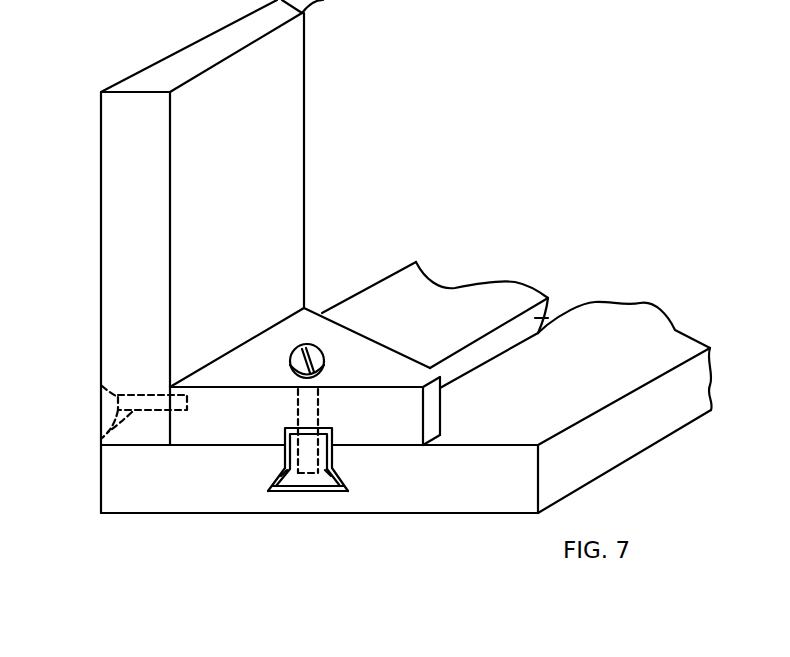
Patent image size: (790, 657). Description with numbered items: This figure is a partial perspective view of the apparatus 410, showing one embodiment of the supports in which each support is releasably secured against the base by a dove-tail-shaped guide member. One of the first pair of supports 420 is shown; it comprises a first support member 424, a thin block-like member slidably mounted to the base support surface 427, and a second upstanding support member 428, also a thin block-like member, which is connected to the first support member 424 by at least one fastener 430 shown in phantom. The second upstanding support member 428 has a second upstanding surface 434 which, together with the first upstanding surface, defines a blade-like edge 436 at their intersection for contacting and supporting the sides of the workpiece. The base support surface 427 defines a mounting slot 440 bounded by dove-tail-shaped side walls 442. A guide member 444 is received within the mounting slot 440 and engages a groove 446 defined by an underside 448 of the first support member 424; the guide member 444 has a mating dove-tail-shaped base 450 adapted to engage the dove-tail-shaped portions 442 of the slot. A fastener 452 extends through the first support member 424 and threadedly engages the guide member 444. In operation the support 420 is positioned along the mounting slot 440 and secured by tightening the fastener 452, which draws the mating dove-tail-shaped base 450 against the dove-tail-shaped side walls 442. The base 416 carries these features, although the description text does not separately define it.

The apparatus 410 is at (436, 241).
The base 416 is at (618, 438).
The first pair of supports 420 is at (96, 91).
The first support member 424 is at (271, 380).
The base support surface 427 is at (566, 396).
The second upstanding support member 428 is at (250, 219).
The fastener 430 is at (103, 436).
The second upstanding surface 434 is at (202, 33).
The blade-like edge 436 is at (100, 165).
The mounting slot 440 is at (268, 500).
The dove-tail-shaped side wall 442 is at (547, 320).
The guide member 444 is at (310, 500).
The groove 446 is at (333, 433).
The underside 448 is at (203, 445).
The mating dove-tail-shaped base 450 is at (283, 480).
The fastener 452 is at (325, 362).